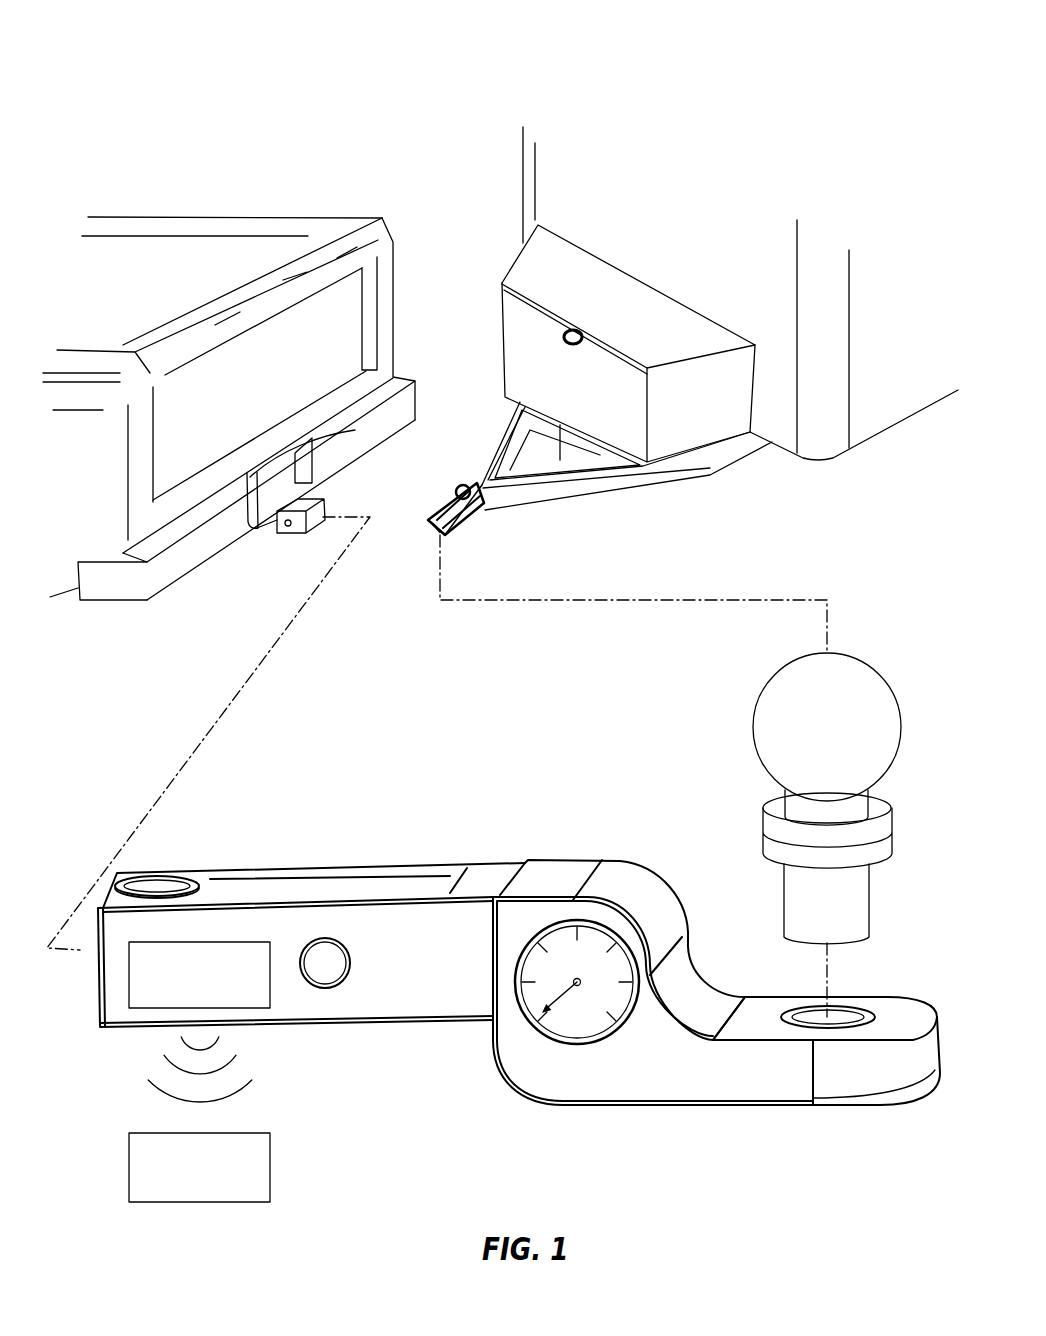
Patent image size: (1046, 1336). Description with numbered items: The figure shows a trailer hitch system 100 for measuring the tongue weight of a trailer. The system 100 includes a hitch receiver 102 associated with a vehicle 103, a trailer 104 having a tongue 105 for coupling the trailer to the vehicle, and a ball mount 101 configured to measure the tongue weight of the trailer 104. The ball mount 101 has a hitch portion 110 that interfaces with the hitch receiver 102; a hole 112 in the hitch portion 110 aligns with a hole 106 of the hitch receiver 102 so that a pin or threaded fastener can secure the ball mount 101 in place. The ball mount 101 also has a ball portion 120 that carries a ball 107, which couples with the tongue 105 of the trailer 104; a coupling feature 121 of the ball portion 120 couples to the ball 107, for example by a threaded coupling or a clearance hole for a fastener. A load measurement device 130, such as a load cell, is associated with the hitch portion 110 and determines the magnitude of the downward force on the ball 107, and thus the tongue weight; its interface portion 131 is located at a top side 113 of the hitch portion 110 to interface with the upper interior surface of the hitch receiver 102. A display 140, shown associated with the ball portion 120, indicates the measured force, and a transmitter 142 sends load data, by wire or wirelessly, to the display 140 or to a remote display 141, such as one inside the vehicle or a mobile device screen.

The trailer hitch system 100 is at (688, 42).
The ball mount 101 is at (357, 706).
The hitch receiver 102 is at (309, 550).
The vehicle 103 is at (257, 153).
The trailer 104 is at (498, 190).
The tongue 105 is at (435, 518).
The hole 106 is at (288, 528).
The ball 107 is at (869, 642).
The hitch portion 110 is at (279, 795).
The hole 112 is at (327, 973).
The top side 113 is at (287, 849).
The ball portion 120 is at (885, 933).
The coupling feature 121 is at (803, 981).
The load measurement device 130 is at (121, 849).
The interface portion 131 is at (167, 882).
The display 140 is at (577, 1017).
The remote display 141 is at (270, 1167).
The transmitter 142 is at (150, 1010).